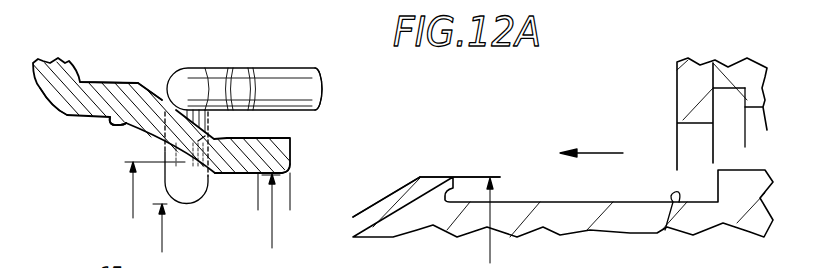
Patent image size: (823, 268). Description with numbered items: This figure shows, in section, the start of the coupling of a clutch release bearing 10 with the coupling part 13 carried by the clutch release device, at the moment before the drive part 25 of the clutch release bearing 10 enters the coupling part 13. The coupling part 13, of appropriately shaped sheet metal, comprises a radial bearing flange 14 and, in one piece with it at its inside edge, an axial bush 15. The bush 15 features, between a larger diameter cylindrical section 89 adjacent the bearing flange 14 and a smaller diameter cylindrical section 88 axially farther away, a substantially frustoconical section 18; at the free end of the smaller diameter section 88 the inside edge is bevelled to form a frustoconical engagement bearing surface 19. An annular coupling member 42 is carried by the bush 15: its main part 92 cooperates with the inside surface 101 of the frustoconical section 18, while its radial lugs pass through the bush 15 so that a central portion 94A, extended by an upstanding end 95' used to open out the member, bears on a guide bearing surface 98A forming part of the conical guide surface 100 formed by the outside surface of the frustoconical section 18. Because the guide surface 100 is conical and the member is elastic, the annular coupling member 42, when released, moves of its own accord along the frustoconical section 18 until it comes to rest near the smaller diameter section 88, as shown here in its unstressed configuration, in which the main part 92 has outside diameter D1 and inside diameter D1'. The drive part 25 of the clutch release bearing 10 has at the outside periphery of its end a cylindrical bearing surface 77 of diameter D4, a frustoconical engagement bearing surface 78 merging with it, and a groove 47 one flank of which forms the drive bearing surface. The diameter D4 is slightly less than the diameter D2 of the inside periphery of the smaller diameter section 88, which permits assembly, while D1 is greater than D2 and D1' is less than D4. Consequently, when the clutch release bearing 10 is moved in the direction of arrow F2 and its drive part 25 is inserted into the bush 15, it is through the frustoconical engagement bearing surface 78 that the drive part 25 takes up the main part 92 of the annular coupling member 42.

The clutch release bearing 10 is at (745, 52).
The coupling part 13 is at (63, 120).
The bearing flange 14 is at (44, 58).
The bush 15 is at (124, 74).
The frustoconical section 18 is at (198, 141).
The frustoconical engagement bearing surface 19 is at (291, 164).
The drive part 25 is at (512, 196).
The annular coupling member 42 is at (283, 60).
The groove 47 is at (669, 233).
The cylindrical bearing surface 77 is at (430, 176).
The frustoconical engagement bearing surface 78 is at (373, 201).
The smaller diameter cylindrical section 88 is at (287, 138).
The larger diameter cylindrical section 89 is at (97, 92).
The main part 92 is at (185, 199).
The central portion 94A is at (183, 67).
The upstanding end 95' is at (320, 72).
The guide bearing surface 98A is at (115, 138).
The guide surface 100 is at (223, 77).
The inside surface 101 is at (115, 113).
The outside diameter D1 is at (146, 190).
The inside diameter D1' is at (150, 229).
The inside periphery diameter D2 is at (273, 243).
The cylindrical bearing surface diameter D4 is at (491, 240).
The insertion direction arrow F2 is at (600, 152).